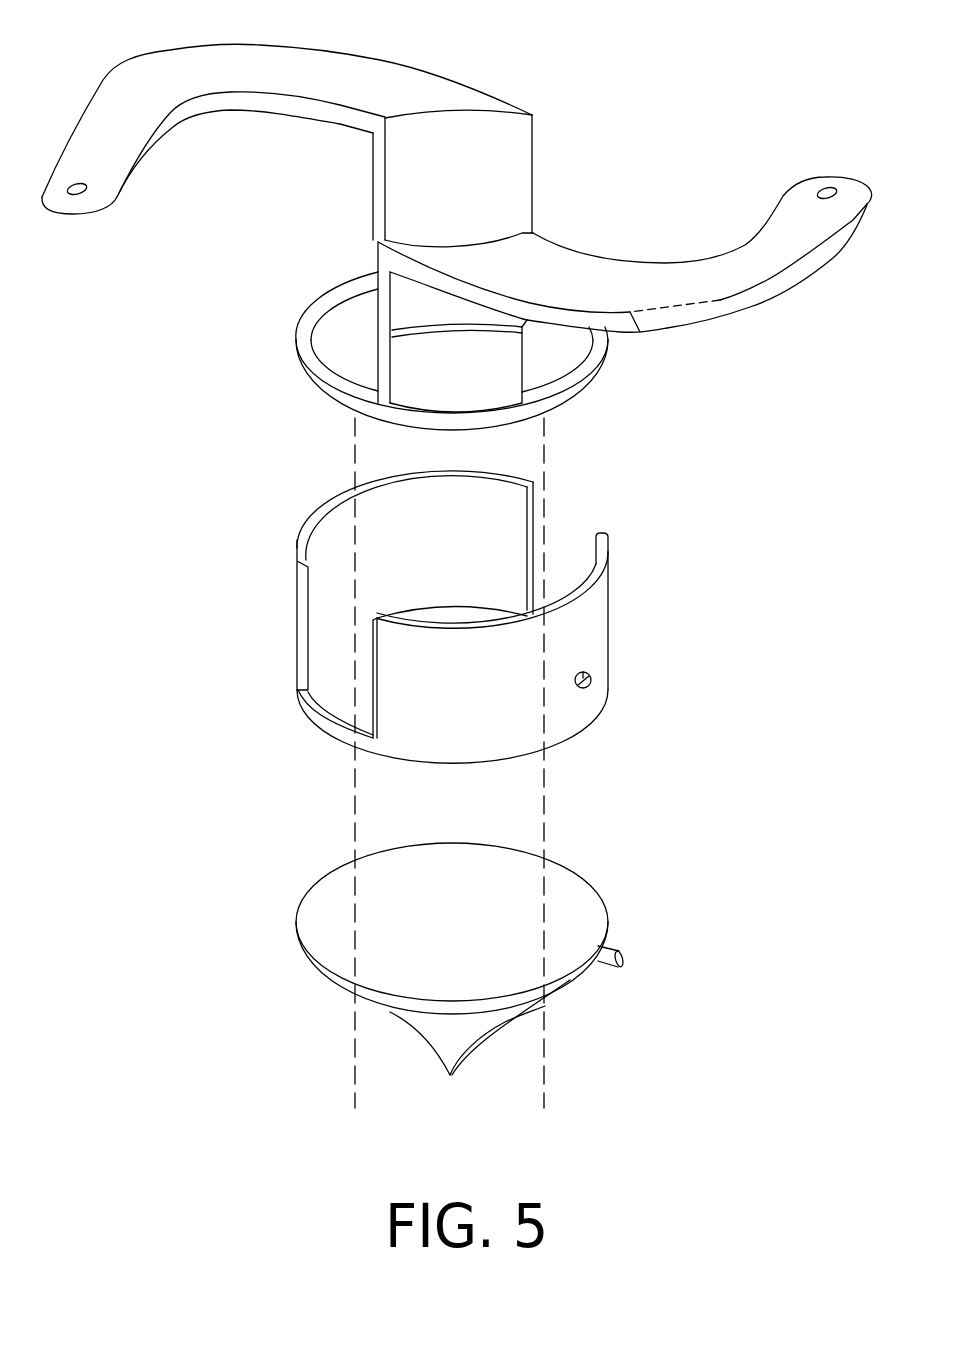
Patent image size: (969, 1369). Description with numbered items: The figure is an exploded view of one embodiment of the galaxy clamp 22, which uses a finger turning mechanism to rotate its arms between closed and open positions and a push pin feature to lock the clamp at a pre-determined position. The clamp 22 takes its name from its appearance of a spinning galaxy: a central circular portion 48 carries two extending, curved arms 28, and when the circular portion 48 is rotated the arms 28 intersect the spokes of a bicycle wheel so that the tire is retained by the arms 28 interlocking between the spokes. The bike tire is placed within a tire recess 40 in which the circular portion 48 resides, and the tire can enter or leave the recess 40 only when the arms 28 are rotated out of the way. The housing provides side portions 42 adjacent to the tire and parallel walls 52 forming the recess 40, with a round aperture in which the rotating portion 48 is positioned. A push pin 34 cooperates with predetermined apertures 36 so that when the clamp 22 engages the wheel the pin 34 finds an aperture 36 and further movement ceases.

The galaxy clamp 22 is at (729, 74).
The curved arms 28 is at (247, 68).
The parallel walls 52 is at (505, 180).
The side portions 42 is at (542, 408).
The tire recess 40 is at (430, 617).
The aperture 36 is at (592, 680).
The central circular portion 48 is at (568, 980).
The push pin 34 is at (619, 947).